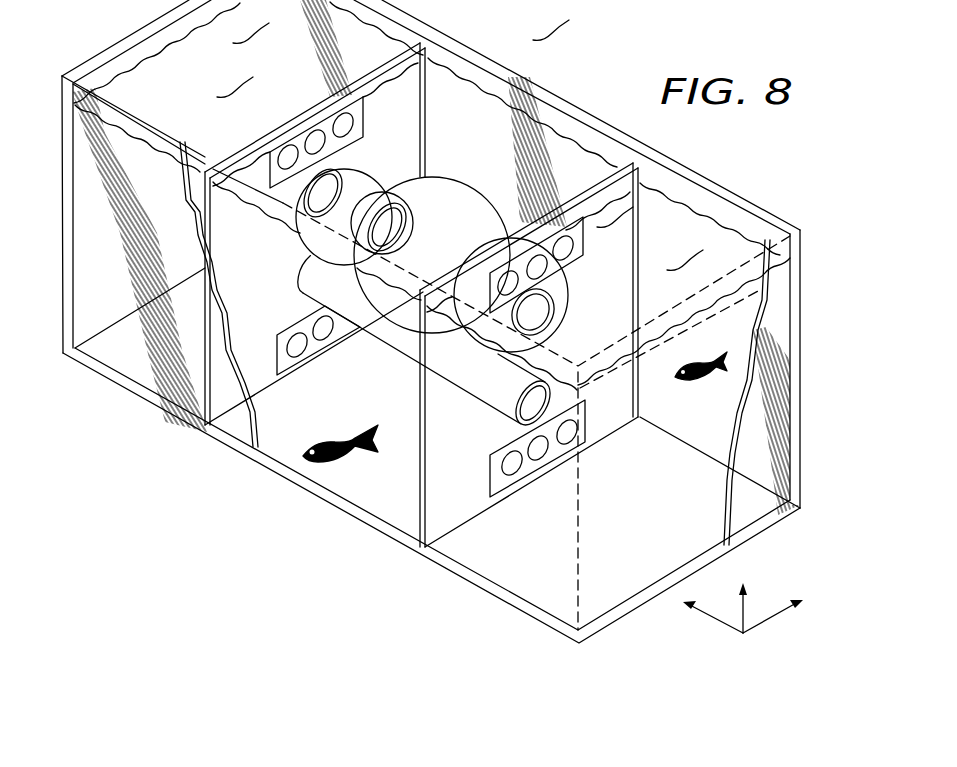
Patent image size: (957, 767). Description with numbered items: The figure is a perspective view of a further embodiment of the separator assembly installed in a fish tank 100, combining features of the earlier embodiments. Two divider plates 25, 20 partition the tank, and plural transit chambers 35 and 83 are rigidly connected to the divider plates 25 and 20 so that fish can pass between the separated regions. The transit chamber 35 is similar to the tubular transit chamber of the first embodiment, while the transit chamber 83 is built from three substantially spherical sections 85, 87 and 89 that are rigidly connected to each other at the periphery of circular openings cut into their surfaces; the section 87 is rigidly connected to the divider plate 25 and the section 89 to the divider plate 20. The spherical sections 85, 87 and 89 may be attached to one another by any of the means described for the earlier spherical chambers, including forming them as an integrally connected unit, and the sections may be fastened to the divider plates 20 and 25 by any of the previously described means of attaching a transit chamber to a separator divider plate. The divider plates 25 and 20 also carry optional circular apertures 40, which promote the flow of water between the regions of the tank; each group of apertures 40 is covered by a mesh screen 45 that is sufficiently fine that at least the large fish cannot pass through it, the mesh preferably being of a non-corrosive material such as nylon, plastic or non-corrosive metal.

The fish tank 100 is at (740, 190).
The divider plate 20 is at (641, 398).
The divider plate 25 is at (428, 114).
The transit chamber 35 is at (412, 359).
The circular apertures 40 is at (286, 154).
The mesh screen 45 is at (368, 100).
The transit chamber 83 is at (300, 252).
The spherical section 85 is at (464, 185).
The spherical section 87 is at (370, 165).
The spherical section 89 is at (484, 355).